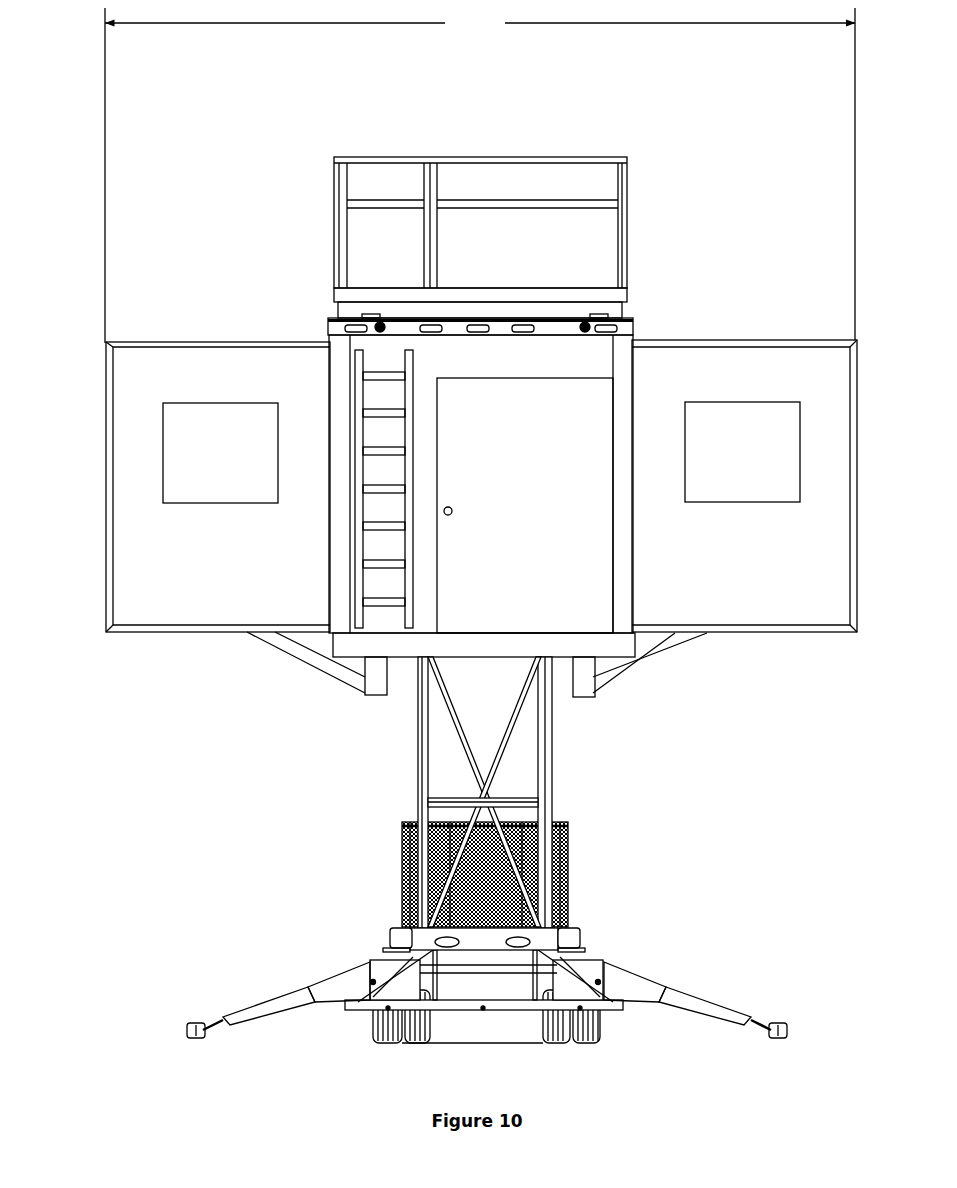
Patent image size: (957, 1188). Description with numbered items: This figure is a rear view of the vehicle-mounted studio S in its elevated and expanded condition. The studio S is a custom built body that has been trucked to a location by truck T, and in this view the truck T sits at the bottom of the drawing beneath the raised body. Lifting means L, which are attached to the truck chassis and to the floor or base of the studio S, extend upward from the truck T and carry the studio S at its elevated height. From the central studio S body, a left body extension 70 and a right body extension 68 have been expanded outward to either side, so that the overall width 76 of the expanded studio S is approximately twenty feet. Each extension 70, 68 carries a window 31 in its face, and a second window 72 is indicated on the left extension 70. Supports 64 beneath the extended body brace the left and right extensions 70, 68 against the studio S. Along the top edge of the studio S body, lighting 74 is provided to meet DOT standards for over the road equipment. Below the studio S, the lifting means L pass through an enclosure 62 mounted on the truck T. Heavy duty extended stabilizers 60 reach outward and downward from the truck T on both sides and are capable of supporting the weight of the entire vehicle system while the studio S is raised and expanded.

The width 76 is at (480, 175).
The left body extension 70 is at (120, 335).
The window in side panel 72 is at (242, 403).
The lighting 74 is at (342, 318).
The right body extension 68 is at (740, 340).
The window 31 is at (742, 452).
The supports 64 is at (312, 674).
The lifting means L is at (398, 752).
The studio S is at (760, 647).
The equipment basket 62 is at (570, 842).
The truck T is at (378, 937).
The heavy duty extended stabilizers 60 is at (682, 985).